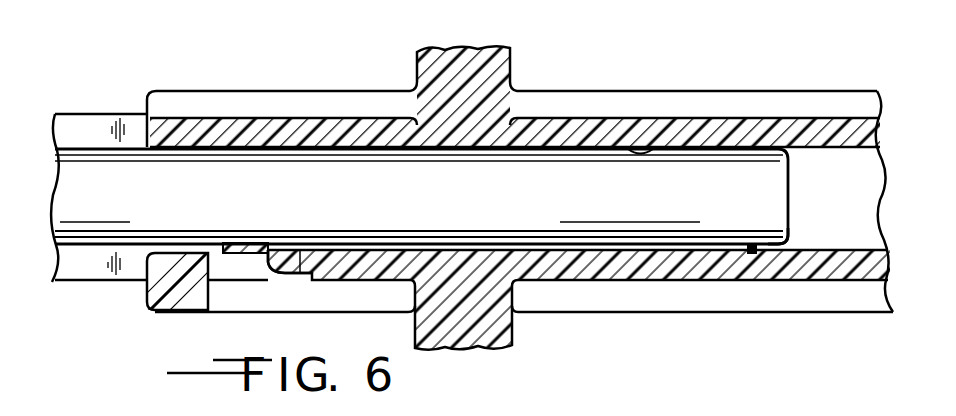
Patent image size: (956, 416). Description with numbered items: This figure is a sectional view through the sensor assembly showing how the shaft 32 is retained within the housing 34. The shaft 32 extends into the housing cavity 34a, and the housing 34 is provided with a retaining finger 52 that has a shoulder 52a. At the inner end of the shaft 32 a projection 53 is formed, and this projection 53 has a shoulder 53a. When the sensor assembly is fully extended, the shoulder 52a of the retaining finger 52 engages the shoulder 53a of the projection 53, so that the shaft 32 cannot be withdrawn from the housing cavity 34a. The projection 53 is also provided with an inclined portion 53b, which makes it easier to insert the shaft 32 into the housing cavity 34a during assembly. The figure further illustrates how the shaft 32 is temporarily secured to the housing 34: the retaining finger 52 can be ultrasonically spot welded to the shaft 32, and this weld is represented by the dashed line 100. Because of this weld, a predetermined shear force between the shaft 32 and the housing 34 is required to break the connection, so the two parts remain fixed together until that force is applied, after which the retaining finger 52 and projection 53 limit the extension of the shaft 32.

The shaft 32 is at (92, 289).
The housing 34 is at (551, 78).
The housing cavity 34a is at (626, 148).
The retaining finger 52 is at (278, 248).
The shoulder 52a is at (300, 247).
The projection 53 is at (752, 250).
The shoulder 53a is at (746, 243).
The inclined portion 53b is at (788, 246).
The dashed line 100 is at (236, 243).